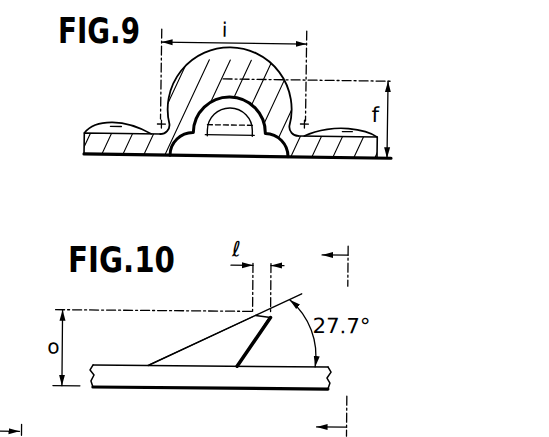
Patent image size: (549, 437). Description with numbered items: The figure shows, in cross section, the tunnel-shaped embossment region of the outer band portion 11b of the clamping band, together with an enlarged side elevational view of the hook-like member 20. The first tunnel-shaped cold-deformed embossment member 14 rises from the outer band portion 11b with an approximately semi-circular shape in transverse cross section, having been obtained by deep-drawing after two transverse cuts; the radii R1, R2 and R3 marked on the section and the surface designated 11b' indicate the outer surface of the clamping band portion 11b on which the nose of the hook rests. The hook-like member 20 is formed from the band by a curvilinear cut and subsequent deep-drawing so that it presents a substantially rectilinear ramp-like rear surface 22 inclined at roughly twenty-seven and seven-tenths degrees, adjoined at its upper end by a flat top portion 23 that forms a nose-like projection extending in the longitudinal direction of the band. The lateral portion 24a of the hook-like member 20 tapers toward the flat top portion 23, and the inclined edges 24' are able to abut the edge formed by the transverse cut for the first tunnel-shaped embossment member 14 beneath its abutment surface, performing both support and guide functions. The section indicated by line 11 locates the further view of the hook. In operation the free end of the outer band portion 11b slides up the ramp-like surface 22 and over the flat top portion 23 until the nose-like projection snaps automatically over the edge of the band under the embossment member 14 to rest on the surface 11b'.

In FIG. 9, the outer band portion 11b is at (121, 157).
In FIG. 9, the outer surface of the clamping band portion 11b' is at (293, 132).
In FIG. 9, the first tunnel-shaped cold-deformed embossment member 14 is at (221, 79).
In FIG. 9, the inner radius of arch R1 is at (210, 106).
In FIG. 9, the intermediate radius R2 is at (245, 115).
In FIG. 9, the fillet radius between arch and flange R3 is at (165, 128).
In FIG. 10, the hook-like member 20 is at (213, 332).
In FIG. 10, the ramp-like rear surface 22 is at (197, 342).
In FIG. 10, the flat top portion 23 is at (263, 311).
In FIG. 10, the lateral portion 24a is at (217, 356).
In FIG. 10, the inclined edges 24' is at (263, 373).
In FIG. 10, the section line 11- 11 is at (332, 332).